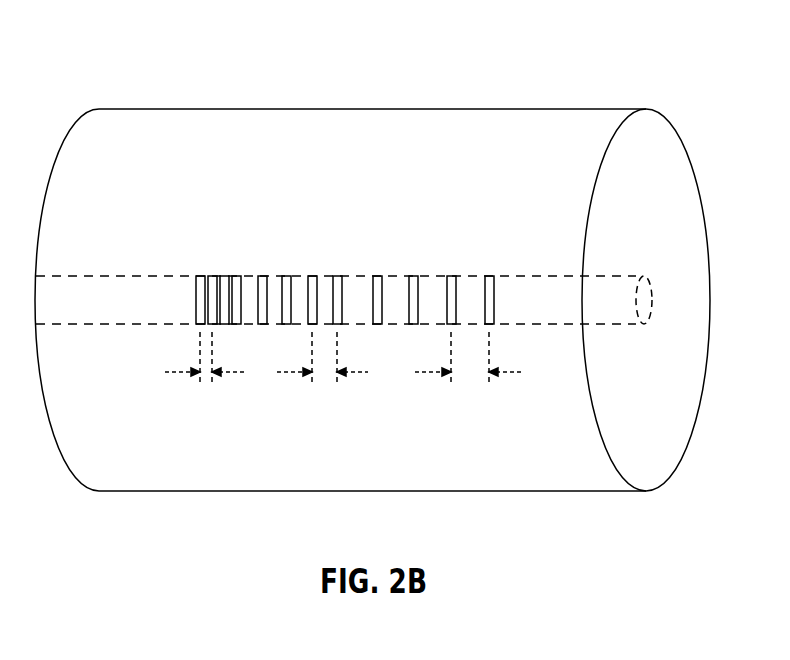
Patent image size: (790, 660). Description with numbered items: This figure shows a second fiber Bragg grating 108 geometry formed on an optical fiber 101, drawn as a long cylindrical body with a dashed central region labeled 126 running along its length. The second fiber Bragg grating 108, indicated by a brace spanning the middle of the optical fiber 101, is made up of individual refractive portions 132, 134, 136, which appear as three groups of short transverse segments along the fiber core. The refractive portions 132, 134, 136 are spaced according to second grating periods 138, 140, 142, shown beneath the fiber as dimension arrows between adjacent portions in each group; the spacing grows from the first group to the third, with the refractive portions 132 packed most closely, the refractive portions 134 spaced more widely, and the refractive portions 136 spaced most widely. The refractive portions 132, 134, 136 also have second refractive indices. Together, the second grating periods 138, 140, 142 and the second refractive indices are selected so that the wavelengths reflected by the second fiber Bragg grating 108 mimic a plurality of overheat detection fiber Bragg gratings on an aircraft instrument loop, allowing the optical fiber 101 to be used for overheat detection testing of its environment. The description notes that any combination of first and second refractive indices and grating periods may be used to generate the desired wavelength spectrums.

The optical fiber 101 is at (468, 123).
The second fiber Bragg grating 108 is at (198, 191).
The lumen 126 is at (533, 285).
The refractive portion 132 is at (200, 276).
The refractive portion 134 is at (262, 276).
The refractive portion 136 is at (377, 276).
The second grating period 138 is at (180, 373).
The second grating period 140 is at (293, 373).
The second grating period 142 is at (432, 373).